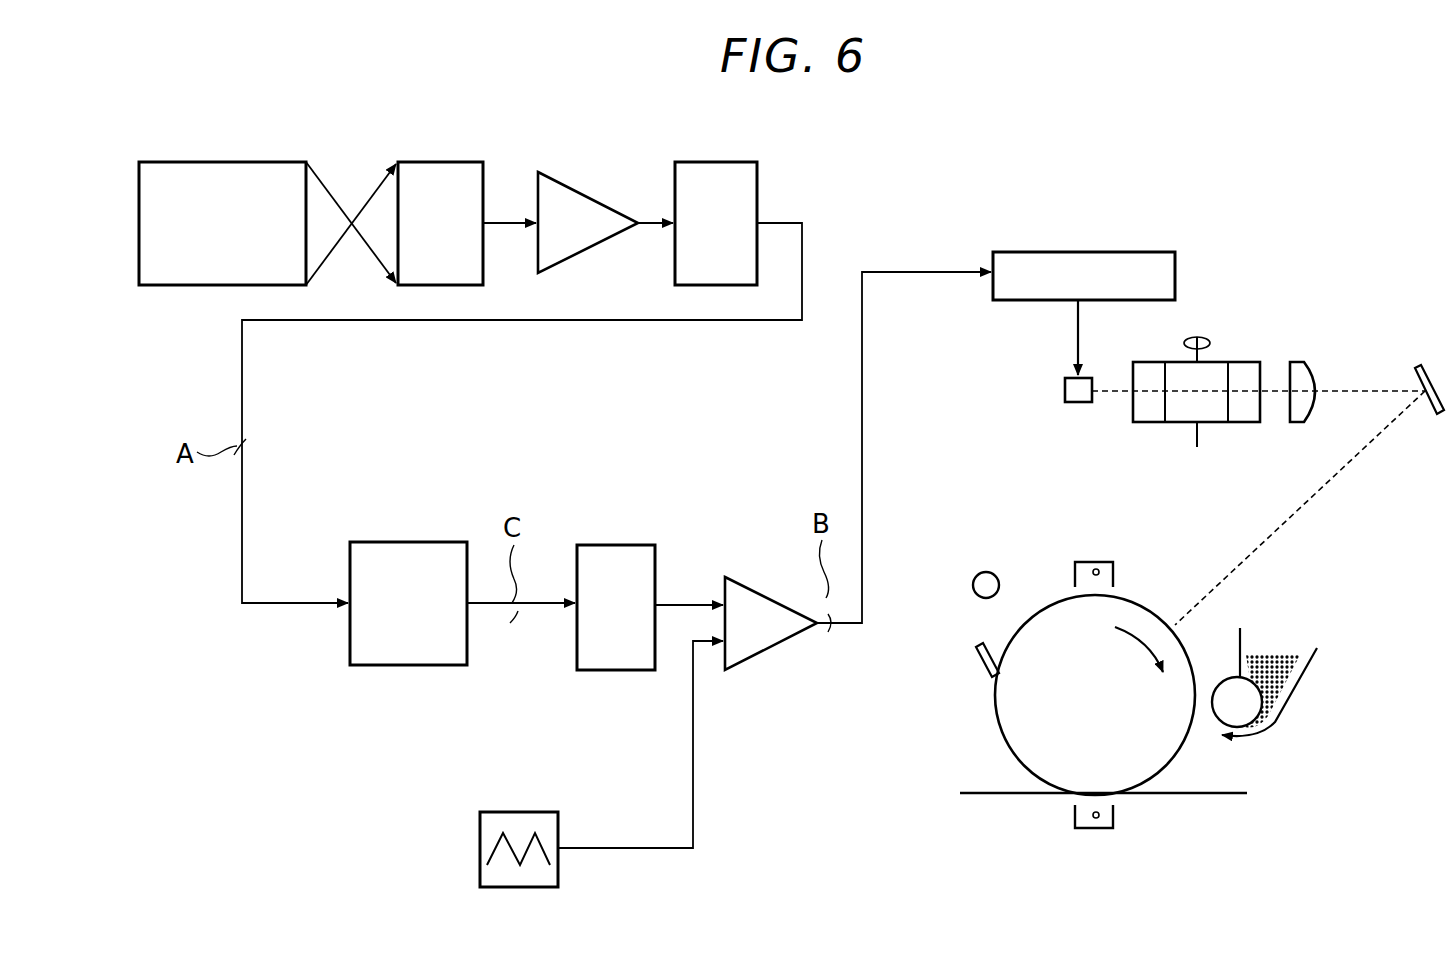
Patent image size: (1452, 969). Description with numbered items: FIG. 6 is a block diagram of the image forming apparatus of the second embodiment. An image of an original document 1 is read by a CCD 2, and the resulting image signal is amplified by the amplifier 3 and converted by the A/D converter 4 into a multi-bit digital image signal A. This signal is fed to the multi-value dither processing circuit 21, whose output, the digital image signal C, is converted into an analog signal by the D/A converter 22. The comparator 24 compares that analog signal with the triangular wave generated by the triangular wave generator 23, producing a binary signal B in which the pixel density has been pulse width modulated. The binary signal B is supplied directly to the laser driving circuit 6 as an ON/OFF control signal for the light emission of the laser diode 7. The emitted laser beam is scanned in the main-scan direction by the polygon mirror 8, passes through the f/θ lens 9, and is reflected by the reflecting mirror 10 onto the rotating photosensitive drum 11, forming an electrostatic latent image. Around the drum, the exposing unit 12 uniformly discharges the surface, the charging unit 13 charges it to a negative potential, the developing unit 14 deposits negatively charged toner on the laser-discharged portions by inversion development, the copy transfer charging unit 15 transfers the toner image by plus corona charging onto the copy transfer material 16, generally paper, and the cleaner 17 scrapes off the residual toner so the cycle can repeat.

The original document 1 is at (279, 162).
The CCD 2 is at (470, 162).
The amplifier 3 is at (572, 184).
The A/D converter 4 is at (734, 162).
The laser driving circuit 6 is at (1152, 250).
The laser diode 7 is at (1090, 375).
The polygon mirror 8 is at (1248, 363).
The f/θ lens 9 is at (1302, 363).
The reflecting mirror 10 is at (1424, 367).
The photosensitive drum 11 is at (1157, 594).
The exposing unit 12 is at (988, 572).
The charging unit 13 is at (1110, 562).
The developing unit 14 is at (1292, 676).
The copy transfer charging unit 15 is at (1079, 828).
The copy transfer material 16 is at (1217, 794).
The cleaner 17 is at (983, 668).
The multi-value dither processing circuit 21 is at (437, 542).
The D/A converter 22 is at (629, 544).
The triangular wave generator 23 is at (525, 812).
The comparator 24 is at (746, 592).